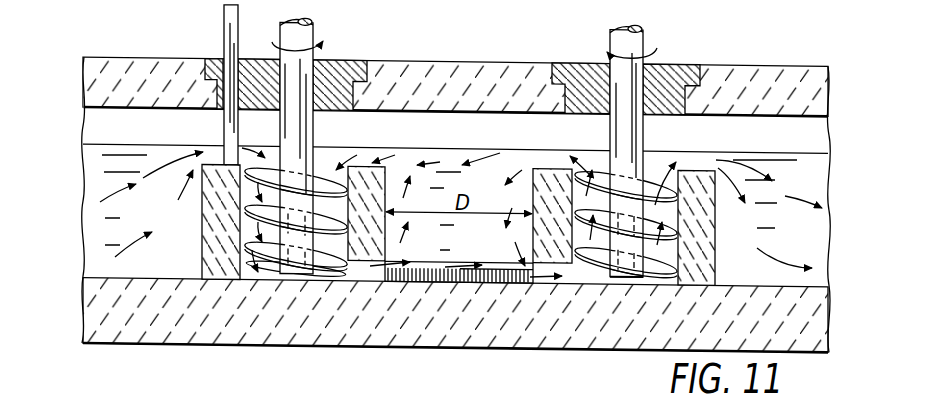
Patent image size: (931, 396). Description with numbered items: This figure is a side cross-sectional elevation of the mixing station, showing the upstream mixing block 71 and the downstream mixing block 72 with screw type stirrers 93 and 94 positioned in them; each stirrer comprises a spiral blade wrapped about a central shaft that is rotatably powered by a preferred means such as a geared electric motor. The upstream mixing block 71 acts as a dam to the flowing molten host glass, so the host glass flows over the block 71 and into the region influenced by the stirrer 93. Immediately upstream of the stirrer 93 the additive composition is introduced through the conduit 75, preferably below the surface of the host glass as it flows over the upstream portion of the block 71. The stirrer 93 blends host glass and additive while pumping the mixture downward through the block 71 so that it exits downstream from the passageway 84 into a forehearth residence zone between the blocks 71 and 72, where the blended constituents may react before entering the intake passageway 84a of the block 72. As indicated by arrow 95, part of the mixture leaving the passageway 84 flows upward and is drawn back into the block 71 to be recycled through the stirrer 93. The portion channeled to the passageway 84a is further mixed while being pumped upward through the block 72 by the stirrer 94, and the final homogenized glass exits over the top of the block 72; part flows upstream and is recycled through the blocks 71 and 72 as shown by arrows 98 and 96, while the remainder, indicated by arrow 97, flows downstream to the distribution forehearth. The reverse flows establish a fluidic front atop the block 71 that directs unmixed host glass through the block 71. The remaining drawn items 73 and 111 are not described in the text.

The upstream mixing block 71 is at (202, 260).
The mixing block 72 is at (716, 243).
The liquid level 73 is at (103, 144).
The conduit 75 is at (224, 30).
The passageway 84 is at (366, 282).
The passageway 84a is at (580, 284).
The screw type stirrer 93 is at (330, 190).
The screw type stirrer 94 is at (645, 182).
The flow arrow 95 is at (405, 130).
The flow arrow 96 is at (514, 176).
The flow arrow 97 is at (730, 157).
The flow arrow 98 is at (452, 130).
The spindle bottom end 111 is at (648, 286).